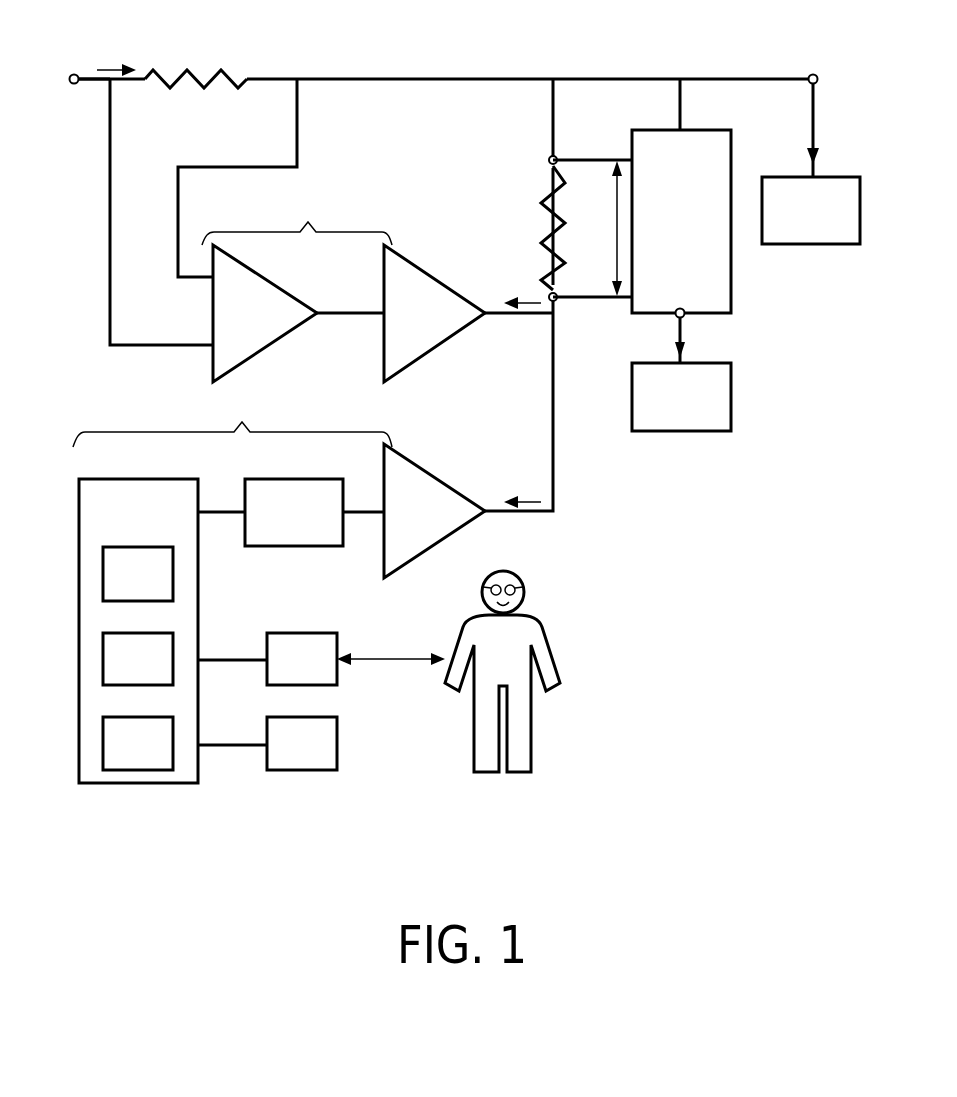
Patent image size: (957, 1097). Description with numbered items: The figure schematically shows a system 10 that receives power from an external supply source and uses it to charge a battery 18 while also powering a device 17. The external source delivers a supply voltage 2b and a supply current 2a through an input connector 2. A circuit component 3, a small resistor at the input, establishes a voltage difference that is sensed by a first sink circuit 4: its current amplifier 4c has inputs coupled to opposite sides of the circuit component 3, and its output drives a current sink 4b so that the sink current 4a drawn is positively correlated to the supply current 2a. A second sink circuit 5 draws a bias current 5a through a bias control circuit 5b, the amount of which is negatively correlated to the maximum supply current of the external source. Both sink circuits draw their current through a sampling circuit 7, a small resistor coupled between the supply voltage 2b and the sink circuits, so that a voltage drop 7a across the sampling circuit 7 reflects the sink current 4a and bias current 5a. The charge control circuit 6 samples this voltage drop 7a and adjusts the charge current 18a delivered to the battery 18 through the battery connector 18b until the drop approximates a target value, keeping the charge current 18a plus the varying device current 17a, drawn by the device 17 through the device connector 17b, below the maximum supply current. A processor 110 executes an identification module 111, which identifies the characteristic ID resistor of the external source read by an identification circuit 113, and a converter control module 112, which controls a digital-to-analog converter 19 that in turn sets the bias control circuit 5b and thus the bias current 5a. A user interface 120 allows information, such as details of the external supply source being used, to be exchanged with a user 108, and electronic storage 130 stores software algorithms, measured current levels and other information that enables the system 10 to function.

The input connector 2 is at (73, 65).
The supply current 2a is at (111, 64).
The supply voltage 2b is at (94, 84).
The circuit component 3 is at (233, 76).
The first sink circuit 4 is at (297, 221).
The sink current 4a is at (523, 298).
The current sink 4b is at (406, 325).
The current amplifier 4c is at (238, 325).
The second sink circuit 5 is at (232, 420).
The bias current 5a is at (523, 497).
The bias control circuit 5b is at (405, 524).
The charge control circuit 6 is at (673, 234).
The sampling circuit 7 is at (560, 264).
The voltage drop 7a is at (614, 210).
The system 10 is at (118, 812).
The device 17 is at (798, 237).
The device current 17a is at (824, 118).
The device connector 17b is at (813, 66).
The battery 18 is at (668, 424).
The charge current 18a is at (690, 320).
The battery connector 18b is at (676, 315).
The digital-to-analog converter 19 is at (281, 535).
The user 108 is at (548, 640).
The processor 110 is at (118, 535).
The identification module 111 is at (118, 757).
The converter control module 112 is at (118, 672).
The identification circuit 113 is at (118, 587).
The user interface 120 is at (282, 672).
The electronic storage 130 is at (282, 757).